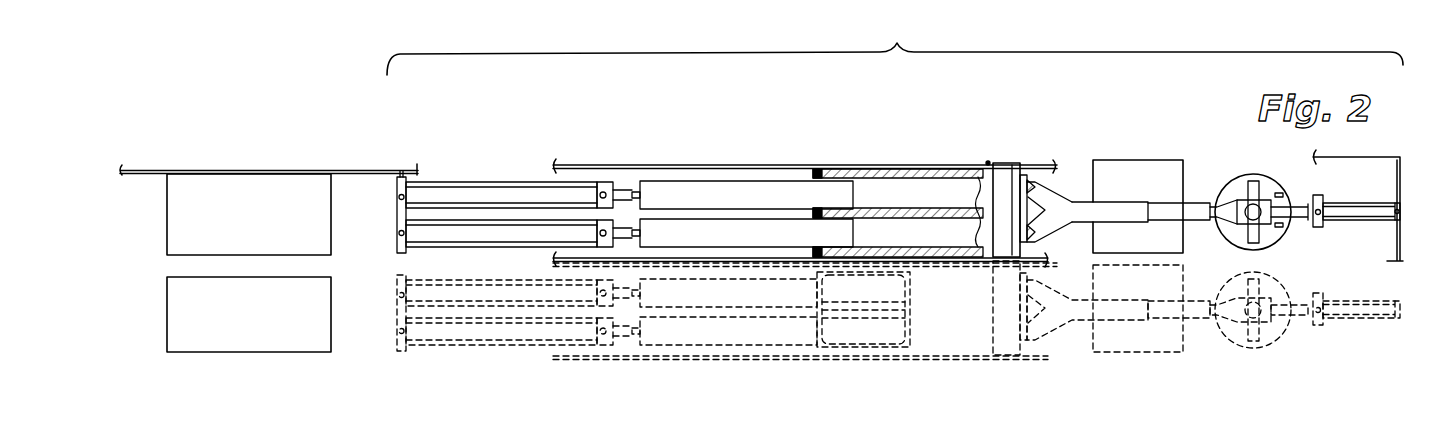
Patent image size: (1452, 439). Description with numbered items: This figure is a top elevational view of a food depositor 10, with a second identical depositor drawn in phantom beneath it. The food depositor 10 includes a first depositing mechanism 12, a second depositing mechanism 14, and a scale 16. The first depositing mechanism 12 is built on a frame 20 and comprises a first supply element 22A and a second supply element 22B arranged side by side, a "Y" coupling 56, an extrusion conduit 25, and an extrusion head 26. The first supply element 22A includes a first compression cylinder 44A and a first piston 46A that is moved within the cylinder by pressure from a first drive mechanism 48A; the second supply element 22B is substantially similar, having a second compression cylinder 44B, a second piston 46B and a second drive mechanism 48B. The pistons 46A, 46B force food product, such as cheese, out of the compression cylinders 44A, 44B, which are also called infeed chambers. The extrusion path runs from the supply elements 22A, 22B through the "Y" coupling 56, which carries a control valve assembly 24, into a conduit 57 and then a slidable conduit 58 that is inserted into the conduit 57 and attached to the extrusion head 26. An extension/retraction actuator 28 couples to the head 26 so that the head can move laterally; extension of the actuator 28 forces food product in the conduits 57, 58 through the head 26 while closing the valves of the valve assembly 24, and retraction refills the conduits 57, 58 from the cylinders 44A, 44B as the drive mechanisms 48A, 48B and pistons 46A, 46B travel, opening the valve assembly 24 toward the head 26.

The food depositor 10 is at (518, 34).
The first depositing mechanism 12 is at (895, 223).
The second depositing mechanism 14 is at (262, 223).
The scale 16 is at (1125, 194).
The frame 20 is at (364, 168).
The first supply element 22A is at (662, 162).
The second supply element 22B is at (516, 255).
The control valve assembly 24 is at (1030, 174).
The extrusion conduit 25 is at (1180, 180).
The extrusion head 26 is at (1272, 233).
The extension/retraction actuator 28 is at (1352, 196).
The first compression cylinder 44A is at (860, 190).
The second compression cylinder 44B is at (880, 227).
The first piston 46A is at (682, 188).
The second piston 46B is at (717, 230).
The first drive mechanism 48A is at (427, 193).
The second drive mechanism 48B is at (428, 236).
The "Y" coupling 56 is at (1050, 207).
The conduit 57 is at (1132, 202).
The slidable conduit 58 is at (1195, 213).